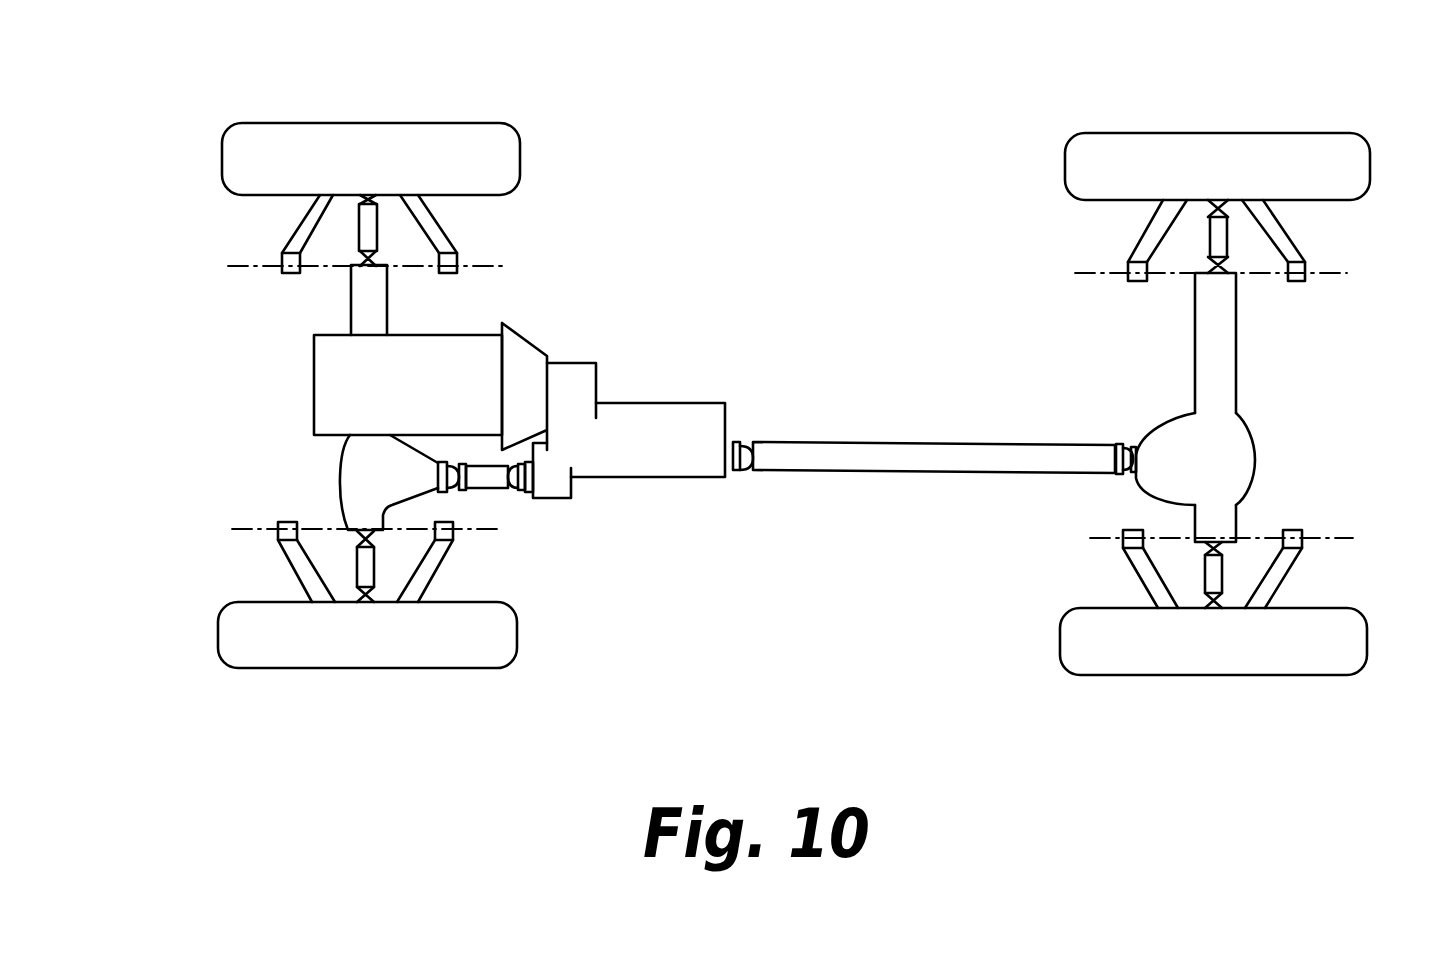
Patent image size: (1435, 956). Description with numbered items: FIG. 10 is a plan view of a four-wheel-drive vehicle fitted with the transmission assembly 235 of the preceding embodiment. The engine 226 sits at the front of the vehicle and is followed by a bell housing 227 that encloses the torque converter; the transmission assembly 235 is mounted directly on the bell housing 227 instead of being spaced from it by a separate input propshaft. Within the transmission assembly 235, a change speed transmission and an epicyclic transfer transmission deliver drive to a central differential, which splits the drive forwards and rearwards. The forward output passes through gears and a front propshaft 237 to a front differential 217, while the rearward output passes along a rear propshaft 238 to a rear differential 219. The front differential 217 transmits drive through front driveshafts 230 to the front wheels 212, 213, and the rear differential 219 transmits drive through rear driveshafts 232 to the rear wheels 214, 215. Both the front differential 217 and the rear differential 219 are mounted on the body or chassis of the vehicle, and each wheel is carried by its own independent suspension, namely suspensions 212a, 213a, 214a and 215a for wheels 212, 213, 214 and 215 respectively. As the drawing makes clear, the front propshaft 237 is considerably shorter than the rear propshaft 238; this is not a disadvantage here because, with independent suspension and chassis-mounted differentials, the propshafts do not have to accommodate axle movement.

The front wheel 212 is at (273, 643).
The front wheel 213 is at (300, 138).
The rear wheel 214 is at (1327, 643).
The rear wheel 215 is at (1318, 167).
The independent suspension 212a is at (293, 571).
The independent suspension 213a is at (299, 222).
The independent suspension 214a is at (1287, 573).
The independent suspension 215a is at (1295, 243).
The front differential 217 is at (365, 470).
The rear differential 219 is at (1207, 458).
The engine 226 is at (404, 397).
The bell housing 227 is at (527, 348).
The front driveshafts 230 is at (373, 232).
The rear driveshafts 232 is at (1215, 235).
The transmission assembly 235 is at (645, 396).
The front propshaft 237 is at (491, 477).
The rear propshaft 238 is at (866, 455).